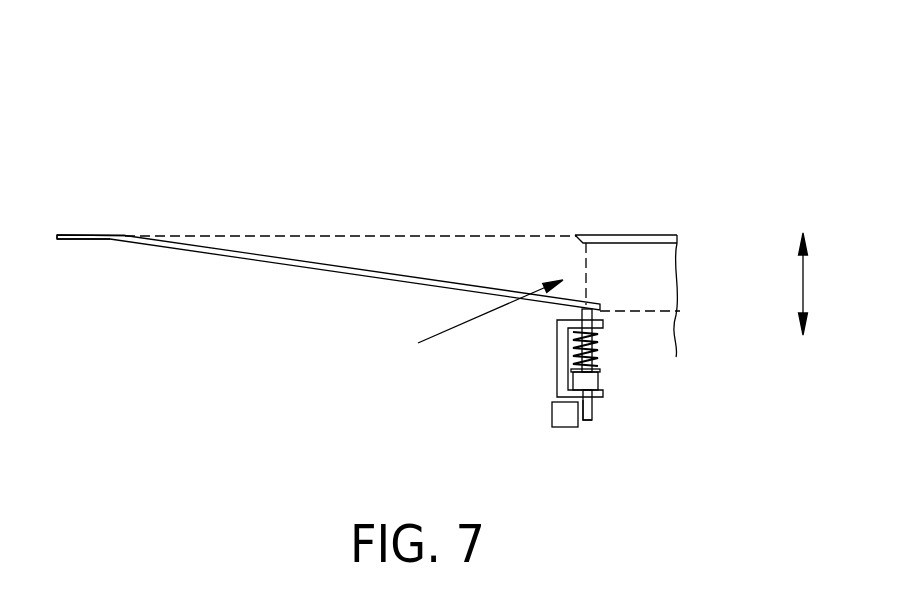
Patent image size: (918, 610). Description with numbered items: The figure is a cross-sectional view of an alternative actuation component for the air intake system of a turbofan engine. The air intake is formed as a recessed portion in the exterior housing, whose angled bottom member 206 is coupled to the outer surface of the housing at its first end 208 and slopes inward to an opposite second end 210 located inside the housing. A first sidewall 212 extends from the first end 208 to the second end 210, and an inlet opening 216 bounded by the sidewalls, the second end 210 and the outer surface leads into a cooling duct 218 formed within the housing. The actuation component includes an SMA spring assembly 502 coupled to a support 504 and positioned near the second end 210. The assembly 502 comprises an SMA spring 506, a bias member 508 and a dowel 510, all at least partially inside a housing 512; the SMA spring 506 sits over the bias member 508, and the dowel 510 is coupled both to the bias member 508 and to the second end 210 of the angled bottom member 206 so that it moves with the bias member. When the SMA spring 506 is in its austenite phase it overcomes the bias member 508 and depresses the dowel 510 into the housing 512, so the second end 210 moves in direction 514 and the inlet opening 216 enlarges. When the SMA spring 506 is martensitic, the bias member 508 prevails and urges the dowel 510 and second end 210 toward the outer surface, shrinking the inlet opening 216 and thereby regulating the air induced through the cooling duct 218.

The angled bottom member 206 is at (330, 267).
The first end 208 is at (107, 234).
The second end 210 is at (606, 311).
The first sidewall 212 is at (460, 271).
The inlet opening 216 is at (466, 327).
The cooling duct 218 is at (665, 288).
The SMA spring assembly 502 is at (526, 369).
The support 504 is at (552, 427).
The SMA spring 506 is at (598, 354).
The bias member 508 is at (599, 380).
The dowel 510 is at (593, 410).
The housing 512 is at (557, 322).
The direction 514 is at (805, 283).